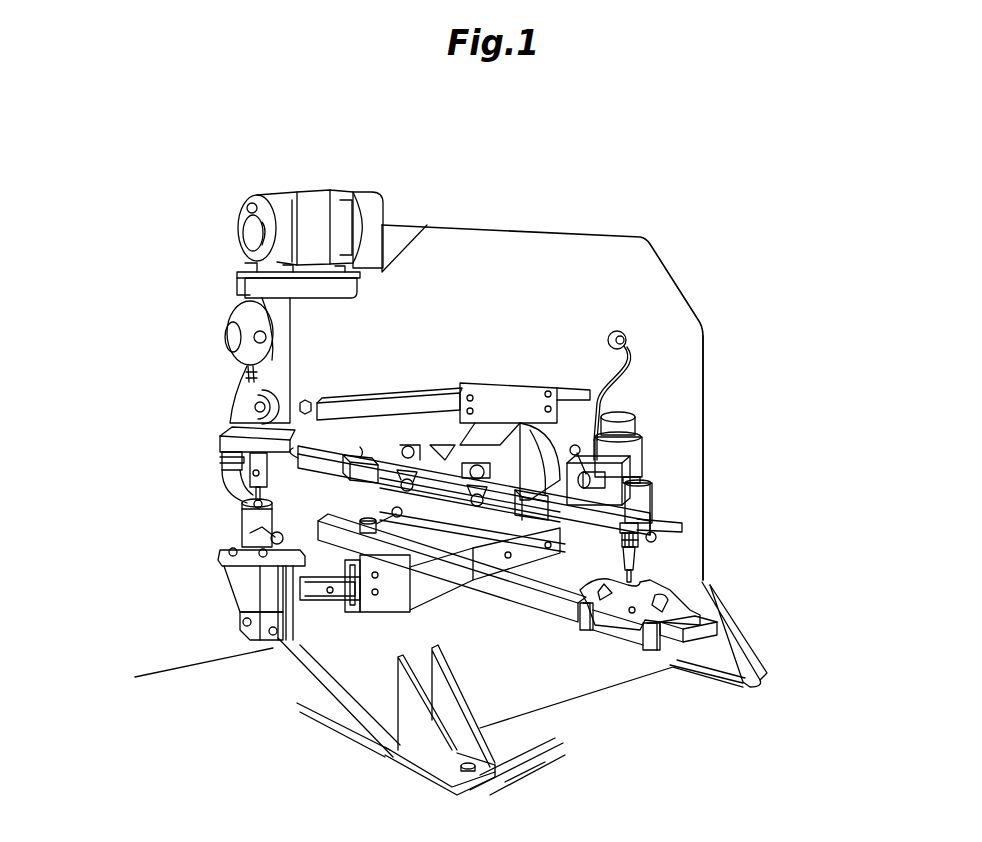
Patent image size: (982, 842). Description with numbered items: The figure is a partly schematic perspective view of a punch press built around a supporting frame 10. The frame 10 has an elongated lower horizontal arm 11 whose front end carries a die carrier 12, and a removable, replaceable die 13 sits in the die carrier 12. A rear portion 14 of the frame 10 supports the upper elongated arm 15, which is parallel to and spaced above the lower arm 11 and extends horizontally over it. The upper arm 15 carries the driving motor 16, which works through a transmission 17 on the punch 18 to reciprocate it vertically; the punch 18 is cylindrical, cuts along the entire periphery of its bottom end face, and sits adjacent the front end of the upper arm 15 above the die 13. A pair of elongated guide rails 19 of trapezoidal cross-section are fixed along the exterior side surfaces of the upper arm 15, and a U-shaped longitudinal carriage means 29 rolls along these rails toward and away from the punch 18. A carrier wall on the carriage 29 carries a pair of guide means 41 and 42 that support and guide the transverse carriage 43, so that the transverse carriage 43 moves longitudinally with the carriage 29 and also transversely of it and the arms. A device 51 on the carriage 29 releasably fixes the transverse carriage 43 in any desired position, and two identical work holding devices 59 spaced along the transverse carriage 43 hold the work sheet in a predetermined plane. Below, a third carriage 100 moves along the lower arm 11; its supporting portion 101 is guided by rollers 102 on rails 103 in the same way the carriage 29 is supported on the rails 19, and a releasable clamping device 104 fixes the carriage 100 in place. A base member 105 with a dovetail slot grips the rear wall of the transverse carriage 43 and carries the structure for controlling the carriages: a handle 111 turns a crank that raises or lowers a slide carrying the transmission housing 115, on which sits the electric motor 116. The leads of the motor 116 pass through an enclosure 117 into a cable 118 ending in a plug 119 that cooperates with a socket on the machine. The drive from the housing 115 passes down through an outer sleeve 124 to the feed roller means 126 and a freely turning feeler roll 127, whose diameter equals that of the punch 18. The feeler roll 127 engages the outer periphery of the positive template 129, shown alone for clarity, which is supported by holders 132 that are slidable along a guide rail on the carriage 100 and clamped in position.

The supporting frame 10 is at (582, 680).
The lower horizontal arm 11 is at (340, 658).
The die carrier 12 is at (247, 527).
The die 13 is at (254, 504).
The rear portion 14 is at (690, 368).
The upper elongated arm 15 is at (500, 267).
The driving motor 16 is at (302, 210).
The transmission 17 is at (243, 380).
The punch 18 is at (262, 494).
The guide rails 19 is at (333, 410).
The longitudinal carriage means 29 is at (528, 395).
The guide means 41 is at (468, 496).
The guide means 42 is at (412, 489).
The transverse carriage 43 is at (657, 527).
The releasable fixing device 51 is at (463, 462).
The work holding devices 59 is at (367, 470).
The third carriage 100 is at (532, 588).
The supporting portion 101 is at (400, 580).
The spacer 102 is at (355, 570).
The rails 103 is at (320, 592).
The releasable clamping device 104 is at (365, 518).
The base member 105 is at (640, 478).
The handle 111 is at (575, 447).
The transmission housing 115 is at (642, 503).
The electric motor 116 is at (637, 450).
The enclosure 117 is at (592, 400).
The cable 118 is at (628, 370).
The plug 119 is at (614, 332).
The outer sleeve 124 is at (622, 543).
The feed roller means 126 is at (636, 560).
The feeler roll 127 is at (627, 578).
The positive template 129 is at (650, 607).
The holders 132 is at (585, 622).